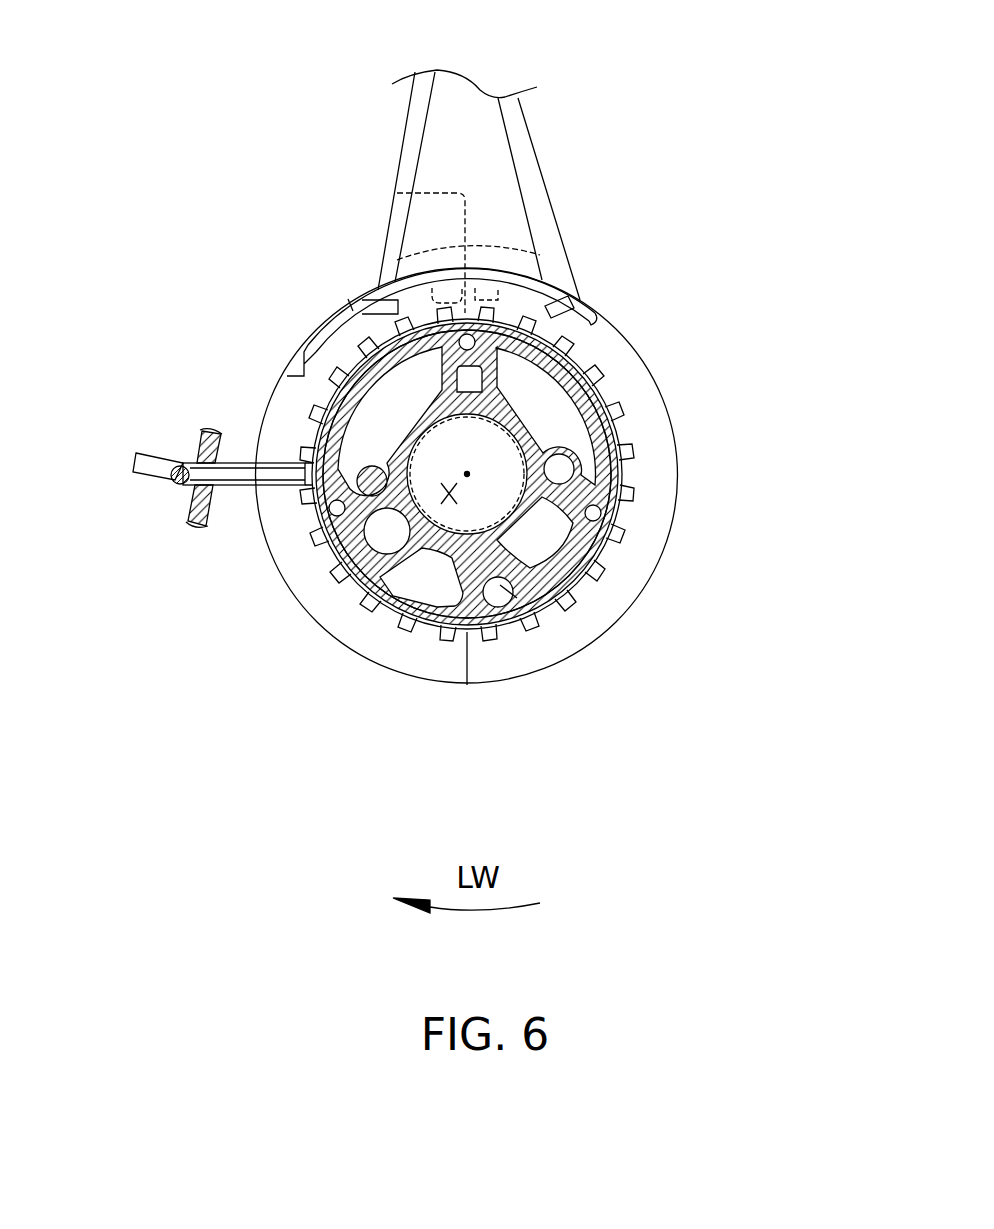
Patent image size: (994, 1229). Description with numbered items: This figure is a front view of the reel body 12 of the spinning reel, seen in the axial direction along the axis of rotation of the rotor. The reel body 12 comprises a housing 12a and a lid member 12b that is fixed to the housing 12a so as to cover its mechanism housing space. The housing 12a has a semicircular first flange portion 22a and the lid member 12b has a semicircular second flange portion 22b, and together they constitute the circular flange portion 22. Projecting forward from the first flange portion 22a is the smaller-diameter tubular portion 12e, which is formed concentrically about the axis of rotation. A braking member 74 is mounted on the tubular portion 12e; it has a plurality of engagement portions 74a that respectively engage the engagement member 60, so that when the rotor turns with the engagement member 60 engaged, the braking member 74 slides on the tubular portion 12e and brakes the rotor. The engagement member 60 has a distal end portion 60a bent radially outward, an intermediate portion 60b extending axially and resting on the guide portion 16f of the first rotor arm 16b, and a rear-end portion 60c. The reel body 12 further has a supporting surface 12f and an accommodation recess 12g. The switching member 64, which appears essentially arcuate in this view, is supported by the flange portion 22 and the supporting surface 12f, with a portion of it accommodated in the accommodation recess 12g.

The reel body 12 is at (473, 191).
The housing 12a is at (395, 233).
The lid member 12b is at (540, 255).
The tubular portion 12e is at (353, 583).
The supporting surface 12f is at (623, 363).
The accommodation recess 12g is at (300, 352).
The switching member 64 is at (348, 302).
The flange portion 22 is at (467, 569).
The first flange portion 22a is at (400, 656).
The second flange portion 22b is at (507, 655).
The braking member 74 is at (544, 533).
The engagement portions 74a is at (573, 585).
The engagement member 60 is at (184, 491).
The distal end portion 60a is at (152, 457).
The intermediate portion 60b is at (168, 485).
The rear-end portion 60c is at (278, 463).
The guide portion 16f is at (190, 497).
The first rotor arm 16b is at (161, 559).